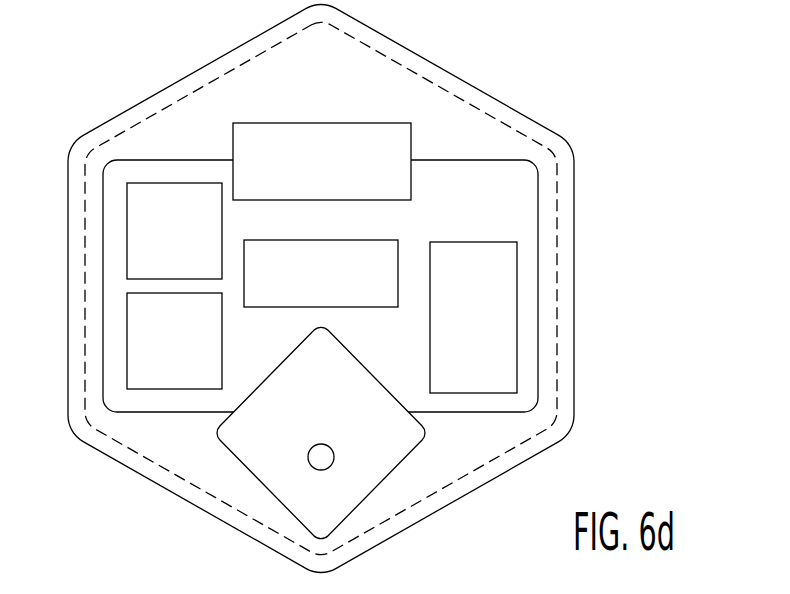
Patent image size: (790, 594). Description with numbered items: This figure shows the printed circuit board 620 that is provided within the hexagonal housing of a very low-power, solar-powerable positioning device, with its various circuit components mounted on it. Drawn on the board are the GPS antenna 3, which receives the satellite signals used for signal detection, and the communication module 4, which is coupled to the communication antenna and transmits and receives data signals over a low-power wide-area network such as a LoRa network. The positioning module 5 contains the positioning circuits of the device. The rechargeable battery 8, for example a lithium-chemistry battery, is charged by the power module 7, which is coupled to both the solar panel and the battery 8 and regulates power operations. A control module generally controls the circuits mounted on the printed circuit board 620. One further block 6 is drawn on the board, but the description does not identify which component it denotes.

The printed circuit board 620 is at (446, 456).
The rechargeable battery 8 is at (322, 161).
The power module 7 is at (174, 231).
The component 6 is at (321, 273).
The positioning module 5 is at (174, 341).
The communication module 4 is at (473, 317).
The GPS antenna 3 is at (321, 432).